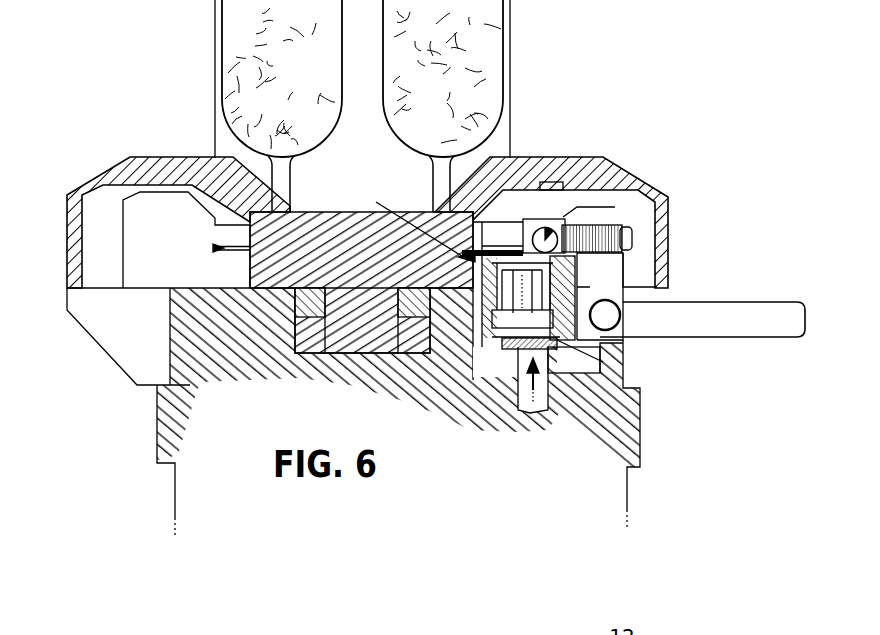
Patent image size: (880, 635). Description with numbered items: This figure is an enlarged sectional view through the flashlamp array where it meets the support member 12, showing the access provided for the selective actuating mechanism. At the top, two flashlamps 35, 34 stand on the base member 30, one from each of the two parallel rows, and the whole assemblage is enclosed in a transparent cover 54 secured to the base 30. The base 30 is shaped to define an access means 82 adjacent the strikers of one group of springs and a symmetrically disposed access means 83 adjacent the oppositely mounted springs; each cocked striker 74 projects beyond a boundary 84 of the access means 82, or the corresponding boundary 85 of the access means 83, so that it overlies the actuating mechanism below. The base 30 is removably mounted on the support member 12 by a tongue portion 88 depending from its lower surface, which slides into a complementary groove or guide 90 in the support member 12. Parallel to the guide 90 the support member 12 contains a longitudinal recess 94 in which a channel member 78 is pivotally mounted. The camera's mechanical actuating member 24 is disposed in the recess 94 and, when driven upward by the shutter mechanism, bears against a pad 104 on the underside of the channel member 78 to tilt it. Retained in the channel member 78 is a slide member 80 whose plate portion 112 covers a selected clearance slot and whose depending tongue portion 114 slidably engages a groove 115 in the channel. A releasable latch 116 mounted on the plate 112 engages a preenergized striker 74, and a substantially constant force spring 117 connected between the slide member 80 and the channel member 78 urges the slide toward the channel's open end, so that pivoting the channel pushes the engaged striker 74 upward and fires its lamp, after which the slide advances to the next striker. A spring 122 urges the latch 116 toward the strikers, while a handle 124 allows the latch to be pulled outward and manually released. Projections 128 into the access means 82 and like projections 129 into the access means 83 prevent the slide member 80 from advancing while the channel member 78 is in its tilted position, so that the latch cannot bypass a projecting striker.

The support member 12 is at (172, 358).
The mechanical actuating member 24 is at (533, 411).
The base member 30 is at (320, 212).
The flashlamp 34 is at (495, 53).
The flashlamp 35 is at (230, 40).
The transparent cover 54 is at (510, 94).
The striker 74 is at (214, 248).
The channel member 78 is at (621, 361).
The slide member 80 is at (614, 208).
The access means 82 is at (637, 196).
The access means 83 is at (132, 217).
The boundary 84 is at (472, 252).
The boundary 85 is at (247, 260).
The tongue portion 88 is at (312, 354).
The guide 90 is at (352, 372).
The longitudinal recess 94 is at (587, 374).
The pad 104 is at (598, 350).
The plate portion 112 is at (525, 222).
The tongue portion 114 is at (474, 262).
The groove 115 is at (510, 349).
The releasable latch 116 is at (490, 240).
The constant force spring 117 is at (517, 284).
The spring 122 is at (613, 260).
The handle 124 is at (767, 337).
The projections 128 is at (532, 192).
The projections 129 is at (216, 219).